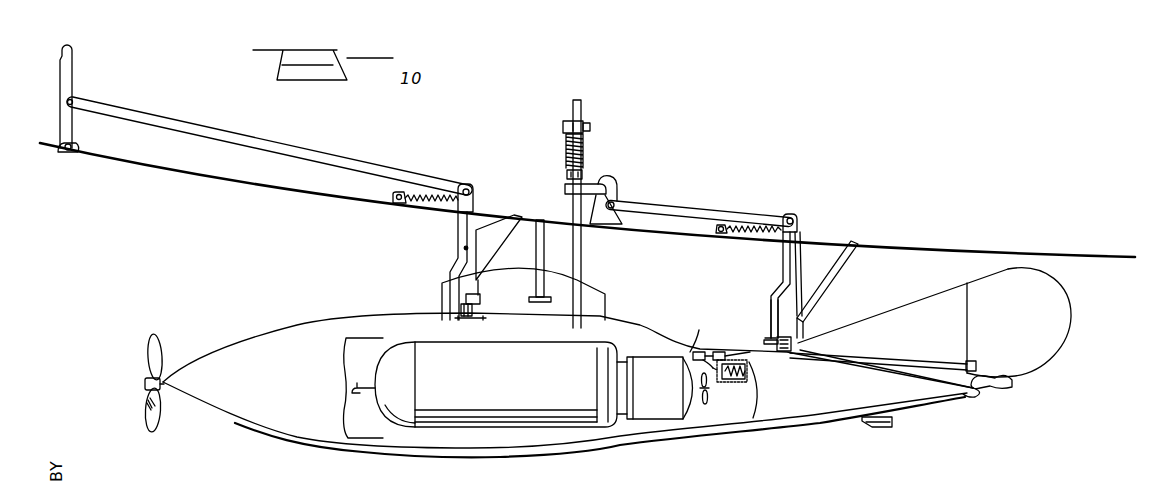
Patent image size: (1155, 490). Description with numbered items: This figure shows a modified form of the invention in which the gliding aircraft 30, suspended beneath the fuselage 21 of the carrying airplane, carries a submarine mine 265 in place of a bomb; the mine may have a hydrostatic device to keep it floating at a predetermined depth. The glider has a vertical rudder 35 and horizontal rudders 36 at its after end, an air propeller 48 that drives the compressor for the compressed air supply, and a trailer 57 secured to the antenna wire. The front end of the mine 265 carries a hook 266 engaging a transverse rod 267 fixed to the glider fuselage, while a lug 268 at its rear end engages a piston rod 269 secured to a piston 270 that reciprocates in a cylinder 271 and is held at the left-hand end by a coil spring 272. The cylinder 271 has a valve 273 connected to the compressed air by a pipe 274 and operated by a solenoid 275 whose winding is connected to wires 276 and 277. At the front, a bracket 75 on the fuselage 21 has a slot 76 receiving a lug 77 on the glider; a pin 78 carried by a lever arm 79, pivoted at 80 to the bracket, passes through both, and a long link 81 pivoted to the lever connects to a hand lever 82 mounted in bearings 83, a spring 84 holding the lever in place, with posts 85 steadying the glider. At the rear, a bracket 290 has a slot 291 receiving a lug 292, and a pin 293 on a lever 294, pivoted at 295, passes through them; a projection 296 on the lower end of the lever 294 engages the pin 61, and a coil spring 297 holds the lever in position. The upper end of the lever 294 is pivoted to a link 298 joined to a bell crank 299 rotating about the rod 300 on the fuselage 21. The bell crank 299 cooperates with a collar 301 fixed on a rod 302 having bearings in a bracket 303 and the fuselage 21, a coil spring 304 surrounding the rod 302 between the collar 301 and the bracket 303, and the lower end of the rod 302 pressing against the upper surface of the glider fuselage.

The fuselage 21 is at (894, 242).
The gliding aircraft 30 is at (253, 430).
The vertical rudder 35 is at (1050, 283).
The horizontal rudders 36 is at (1004, 389).
The air propeller 48 is at (144, 386).
The trailer 57 is at (889, 427).
The rod 61 is at (766, 342).
The bracket 75 is at (481, 262).
The slot 76 is at (480, 299).
The lug 77 is at (468, 318).
The pin 78 is at (473, 310).
The lever arm 79 is at (453, 267).
The pivot 80 is at (464, 248).
The long link 81 is at (234, 136).
The hand lever 82 is at (71, 75).
The bearings 83 is at (72, 152).
The spring 84 is at (431, 209).
The posts 85 is at (540, 240).
The submarine mine 265 is at (444, 350).
The hook 266 is at (351, 386).
The transverse rod 267 is at (352, 396).
The lug 268 is at (700, 373).
The piston rod 269 is at (741, 384).
The piston 270 is at (747, 398).
The cylinder 271 is at (752, 366).
The coil spring 272 is at (748, 380).
The valve 273 is at (746, 356).
The pipe 274 is at (719, 351).
The solenoid 275 is at (712, 350).
The wire 276 is at (696, 350).
The wire 277 is at (695, 345).
The bracket 290 is at (795, 300).
The slot 291 is at (806, 327).
The lug 292 is at (791, 356).
The pin 293 is at (826, 334).
The lever 294 is at (771, 312).
The pivot 295 is at (786, 281).
The projection 296 is at (770, 330).
The coil spring 297 is at (748, 238).
The link 298 is at (703, 208).
The bell crank 299 is at (617, 182).
The rod 300 is at (608, 195).
The collar 301 is at (585, 175).
The rod 302 is at (567, 219).
The bracket 303 is at (590, 126).
The coil spring 304 is at (585, 151).